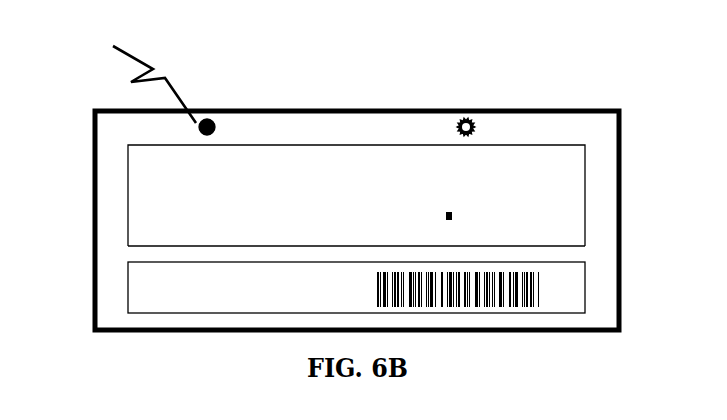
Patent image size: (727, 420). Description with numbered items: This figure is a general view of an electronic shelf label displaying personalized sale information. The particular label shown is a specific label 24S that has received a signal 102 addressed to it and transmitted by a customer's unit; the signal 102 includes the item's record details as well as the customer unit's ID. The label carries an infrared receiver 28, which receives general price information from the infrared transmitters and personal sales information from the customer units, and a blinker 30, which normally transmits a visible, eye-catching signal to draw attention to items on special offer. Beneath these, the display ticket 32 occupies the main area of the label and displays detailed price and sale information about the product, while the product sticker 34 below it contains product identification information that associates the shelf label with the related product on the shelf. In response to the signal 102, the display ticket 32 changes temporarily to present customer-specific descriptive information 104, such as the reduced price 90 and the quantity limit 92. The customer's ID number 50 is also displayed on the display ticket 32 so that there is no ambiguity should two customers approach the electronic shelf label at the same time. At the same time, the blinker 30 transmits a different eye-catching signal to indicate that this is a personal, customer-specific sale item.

The specific label 24S is at (352, 98).
The signal 102 is at (153, 68).
The infrared receiver 28 is at (207, 112).
The blinker 30 is at (465, 114).
The display ticket 32 is at (585, 205).
The quantity limit 92 is at (172, 233).
The reduced price 90 is at (147, 172).
The customer-specific descriptive information 104 is at (162, 197).
The customer's ID number 50 is at (388, 192).
The product sticker 34 is at (128, 302).